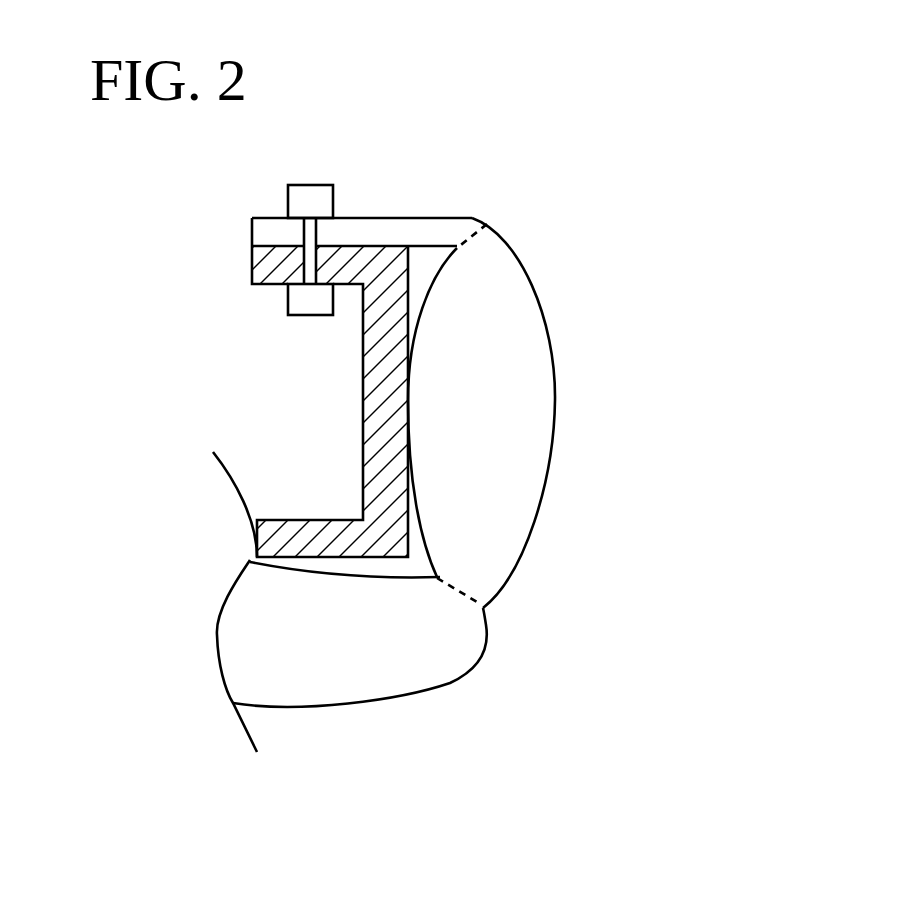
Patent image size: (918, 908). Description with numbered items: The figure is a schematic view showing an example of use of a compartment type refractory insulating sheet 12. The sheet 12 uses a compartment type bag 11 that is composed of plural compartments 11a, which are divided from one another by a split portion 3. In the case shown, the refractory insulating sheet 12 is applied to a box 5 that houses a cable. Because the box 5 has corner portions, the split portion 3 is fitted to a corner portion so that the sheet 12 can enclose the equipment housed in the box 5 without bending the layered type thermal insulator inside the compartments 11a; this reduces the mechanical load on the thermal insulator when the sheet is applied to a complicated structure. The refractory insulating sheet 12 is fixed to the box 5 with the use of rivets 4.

The split portion 3 is at (461, 592).
The rivets 4 is at (315, 185).
The box 5 is at (252, 263).
The compartment type bag 11 is at (594, 615).
The compartments 11a is at (505, 600).
The refractory insulating sheet 12 is at (570, 212).